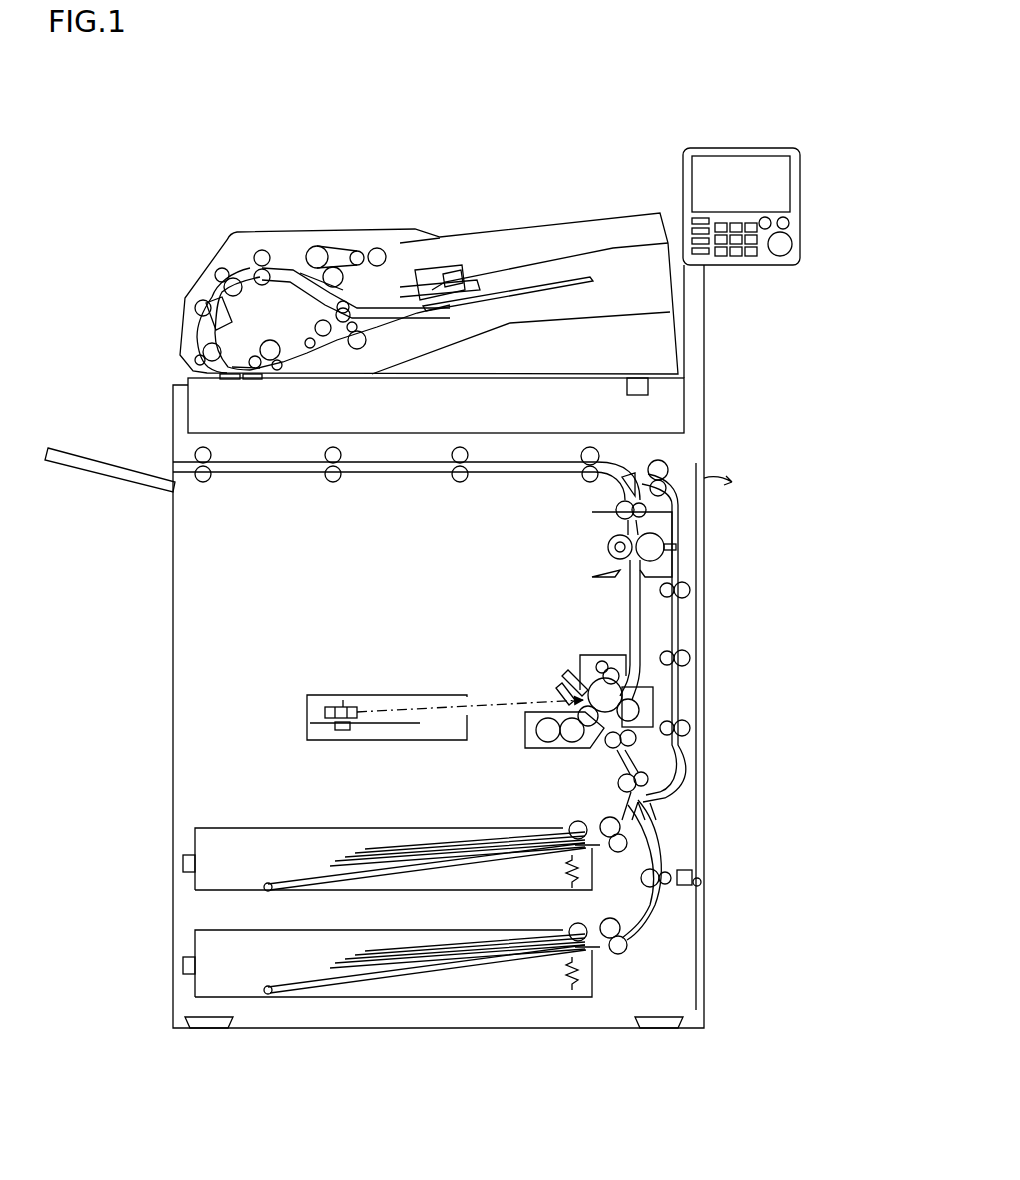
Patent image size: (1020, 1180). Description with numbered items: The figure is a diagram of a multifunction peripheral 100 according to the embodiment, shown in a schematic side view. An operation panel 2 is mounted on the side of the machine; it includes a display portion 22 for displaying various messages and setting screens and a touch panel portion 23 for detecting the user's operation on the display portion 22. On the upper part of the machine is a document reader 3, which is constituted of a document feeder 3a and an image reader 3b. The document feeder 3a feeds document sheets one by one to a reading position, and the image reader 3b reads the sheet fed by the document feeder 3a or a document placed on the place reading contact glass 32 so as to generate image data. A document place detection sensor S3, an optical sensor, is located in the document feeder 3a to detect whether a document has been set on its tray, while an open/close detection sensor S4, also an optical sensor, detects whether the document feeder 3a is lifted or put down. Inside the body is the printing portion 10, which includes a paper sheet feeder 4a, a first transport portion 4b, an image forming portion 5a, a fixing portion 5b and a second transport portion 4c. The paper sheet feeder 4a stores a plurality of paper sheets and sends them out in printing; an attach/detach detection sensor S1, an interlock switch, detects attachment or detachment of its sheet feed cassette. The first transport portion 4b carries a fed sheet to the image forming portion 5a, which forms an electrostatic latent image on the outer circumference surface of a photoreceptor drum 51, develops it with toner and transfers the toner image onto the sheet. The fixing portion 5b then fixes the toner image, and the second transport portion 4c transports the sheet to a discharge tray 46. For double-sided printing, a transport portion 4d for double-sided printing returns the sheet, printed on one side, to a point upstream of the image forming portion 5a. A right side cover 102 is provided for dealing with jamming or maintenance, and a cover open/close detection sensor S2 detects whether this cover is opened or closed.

The multifunction peripheral 100 is at (146, 186).
The operation panel 2 is at (728, 180).
The display portion 22 is at (741, 164).
The touch panel portion 23 is at (729, 168).
The document reader 3 is at (170, 233).
The document feeder 3a is at (429, 273).
The image reader 3b is at (481, 387).
The place reading contact glass 32 is at (436, 405).
The document place detection sensor S3 is at (452, 290).
The open/close detection sensor S4 is at (634, 378).
The discharge tray 46 is at (110, 478).
The second transport portion 4c is at (260, 480).
The fixing portion 5b is at (575, 521).
The right side cover 102 is at (697, 518).
The transport portion for double-sided printing 4d is at (682, 623).
The image forming portion 5a is at (570, 670).
The photoreceptor drum 51 is at (600, 690).
The printing portion 10 is at (760, 468).
The paper sheet feeder 4a is at (190, 928).
The attach/detach detection sensor S1 is at (195, 863).
The first transport portion 4b is at (665, 846).
The cover open/close detection sensor S2 is at (686, 888).